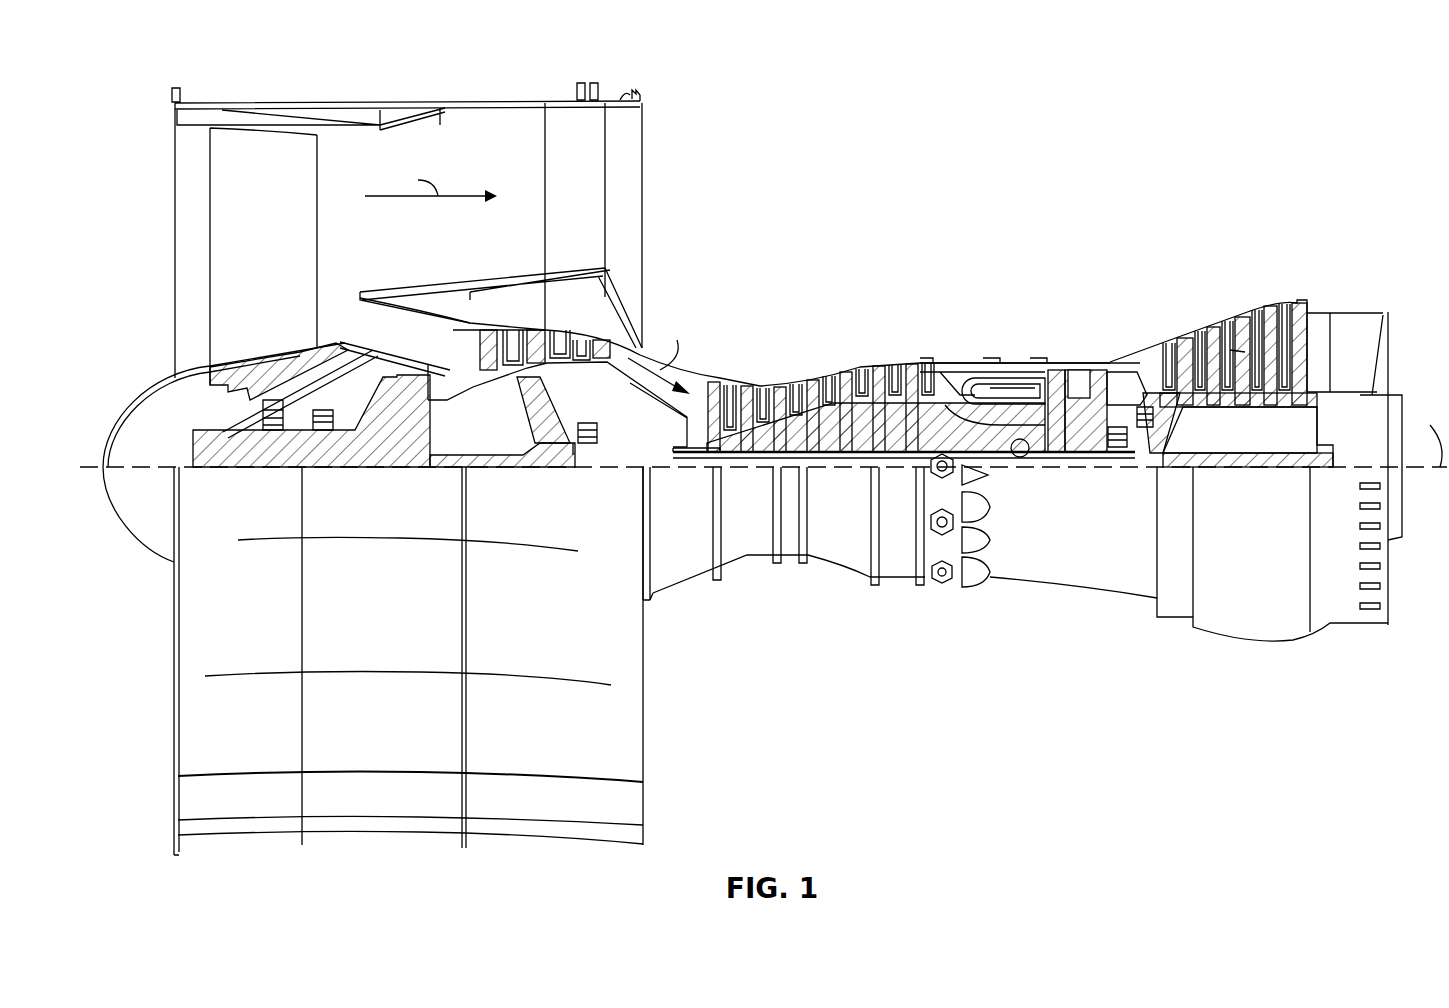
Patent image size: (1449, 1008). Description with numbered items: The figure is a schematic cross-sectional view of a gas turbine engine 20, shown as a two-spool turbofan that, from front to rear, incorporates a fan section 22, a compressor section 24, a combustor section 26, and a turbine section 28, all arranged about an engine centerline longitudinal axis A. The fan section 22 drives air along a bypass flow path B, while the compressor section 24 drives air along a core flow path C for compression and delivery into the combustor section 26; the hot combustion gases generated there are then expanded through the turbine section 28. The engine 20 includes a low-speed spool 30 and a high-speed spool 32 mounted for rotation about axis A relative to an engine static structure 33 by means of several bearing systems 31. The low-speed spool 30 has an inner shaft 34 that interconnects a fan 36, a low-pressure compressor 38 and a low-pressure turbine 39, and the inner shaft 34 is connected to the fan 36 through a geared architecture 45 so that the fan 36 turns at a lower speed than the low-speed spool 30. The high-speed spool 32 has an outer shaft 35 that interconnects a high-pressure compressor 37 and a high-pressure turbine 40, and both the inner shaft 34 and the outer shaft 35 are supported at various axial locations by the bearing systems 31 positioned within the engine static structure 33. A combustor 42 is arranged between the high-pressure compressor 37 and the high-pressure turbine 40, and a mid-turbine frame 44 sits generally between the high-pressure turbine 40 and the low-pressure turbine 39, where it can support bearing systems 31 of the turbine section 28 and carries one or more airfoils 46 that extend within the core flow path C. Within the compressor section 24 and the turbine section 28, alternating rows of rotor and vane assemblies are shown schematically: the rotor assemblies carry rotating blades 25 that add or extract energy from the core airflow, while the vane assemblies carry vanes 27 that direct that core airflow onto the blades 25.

The gas turbine engine 20 is at (1208, 139).
The fan section 22 is at (412, 57).
The compressor section 24 is at (830, 288).
The blades 25 is at (487, 333).
The combustor section 26 is at (1046, 270).
The vanes 27 is at (510, 333).
The turbine section 28 is at (1286, 234).
The low-speed spool 30 is at (860, 474).
The bearing systems 31 is at (292, 423).
The high-speed spool 32 is at (905, 410).
The engine static structure 33 is at (900, 592).
The inner shaft 34 is at (658, 470).
The outer shaft 35 is at (1025, 450).
The fan 36 is at (256, 222).
The high-pressure compressor 37 is at (792, 395).
The low-pressure compressor 38 is at (540, 333).
The low-pressure turbine 39 is at (1243, 350).
The high-pressure turbine 40 is at (1080, 378).
The combustor 42 is at (1003, 385).
The mid-turbine frame 44 is at (1125, 355).
The geared architecture 45 is at (410, 430).
The airfoils 46 is at (1120, 393).